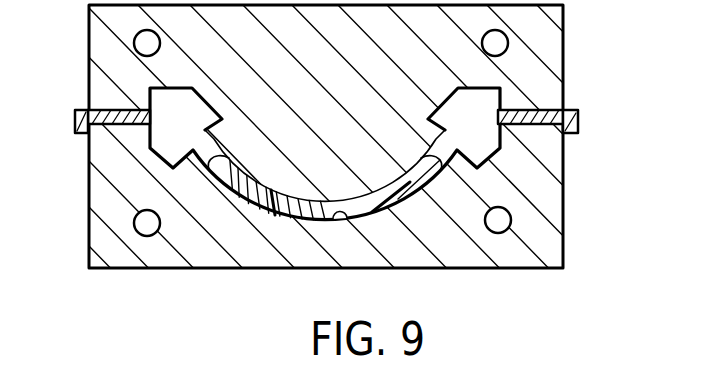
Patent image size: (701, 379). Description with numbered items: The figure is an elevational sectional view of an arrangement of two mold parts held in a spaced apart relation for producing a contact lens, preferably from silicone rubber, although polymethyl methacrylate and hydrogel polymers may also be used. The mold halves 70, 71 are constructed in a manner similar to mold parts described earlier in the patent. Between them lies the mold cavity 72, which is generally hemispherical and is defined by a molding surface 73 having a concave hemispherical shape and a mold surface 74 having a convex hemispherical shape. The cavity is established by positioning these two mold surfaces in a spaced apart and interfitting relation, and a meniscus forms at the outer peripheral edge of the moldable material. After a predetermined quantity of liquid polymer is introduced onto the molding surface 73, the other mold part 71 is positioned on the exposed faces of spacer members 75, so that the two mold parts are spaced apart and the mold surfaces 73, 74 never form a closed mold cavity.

The mold half 70 is at (556, 36).
The mold half 71 is at (555, 158).
The mold cavity 72 is at (406, 199).
The molding surface 73 is at (281, 207).
The mold surface 74 is at (352, 213).
The spacer members 75 is at (76, 112).